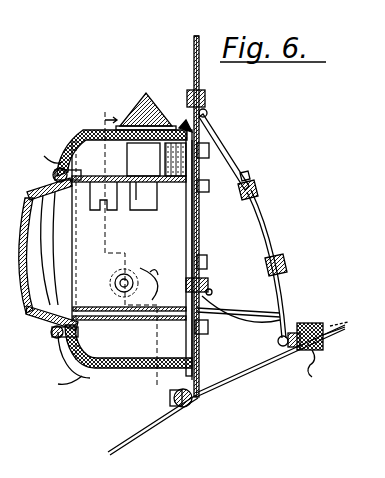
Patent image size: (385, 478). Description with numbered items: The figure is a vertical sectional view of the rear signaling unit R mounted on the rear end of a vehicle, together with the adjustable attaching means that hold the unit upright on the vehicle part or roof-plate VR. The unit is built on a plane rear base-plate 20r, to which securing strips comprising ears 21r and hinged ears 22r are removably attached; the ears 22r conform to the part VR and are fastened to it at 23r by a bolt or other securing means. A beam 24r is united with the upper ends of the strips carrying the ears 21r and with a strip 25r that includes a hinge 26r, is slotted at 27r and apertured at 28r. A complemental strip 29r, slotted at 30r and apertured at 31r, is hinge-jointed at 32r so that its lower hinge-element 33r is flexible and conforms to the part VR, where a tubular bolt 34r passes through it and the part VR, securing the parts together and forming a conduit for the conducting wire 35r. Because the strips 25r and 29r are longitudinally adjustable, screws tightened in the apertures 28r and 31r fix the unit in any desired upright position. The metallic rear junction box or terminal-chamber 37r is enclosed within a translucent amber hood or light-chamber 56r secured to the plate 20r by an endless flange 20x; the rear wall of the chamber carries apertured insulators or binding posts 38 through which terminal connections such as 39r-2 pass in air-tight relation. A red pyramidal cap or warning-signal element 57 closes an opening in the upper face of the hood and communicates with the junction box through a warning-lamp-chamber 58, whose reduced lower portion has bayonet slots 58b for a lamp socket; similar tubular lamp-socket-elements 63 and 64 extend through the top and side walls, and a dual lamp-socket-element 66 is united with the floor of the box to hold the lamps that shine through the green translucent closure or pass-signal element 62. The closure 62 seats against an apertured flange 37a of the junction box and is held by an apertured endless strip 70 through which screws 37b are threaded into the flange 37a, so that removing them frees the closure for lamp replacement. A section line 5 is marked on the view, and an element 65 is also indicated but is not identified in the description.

The rear base-plate 20r is at (200, 200).
The ears of securing strips 21r is at (200, 216).
The strip 25r is at (199, 80).
The beam 24r is at (205, 100).
The hinge 26r is at (207, 114).
The slot 27r is at (228, 158).
The complemental strip 29r is at (250, 177).
The aperture 31r is at (258, 192).
The slot 30r is at (262, 214).
The aperture 28r is at (272, 276).
The hinge joint 32r is at (278, 342).
The tubular bolt 34r is at (293, 333).
The hinge-element 33r is at (334, 306).
The roof-plate of the vehicle VR is at (210, 389).
The ears of securing strips 22r is at (160, 418).
The bolt or securing means 23r is at (192, 399).
The apertured insulators 38 is at (208, 283).
The terminal connection 39r-2 is at (212, 293).
The conducting wire 35r is at (252, 312).
The rear junction box 37r is at (192, 183).
The rear signaling unit R is at (72, 136).
The apertured flange 37a is at (88, 134).
The section line 5 is at (130, 248).
The translucent cap 57 is at (142, 110).
The endless flange 20x is at (183, 123).
The translucent hood 56r is at (54, 267).
The apertured endless strip 70 is at (53, 175).
The screws 37b is at (44, 187).
The pass-signal-element 62 is at (30, 313).
The tubular lamp-socket-element 63 is at (102, 222).
The warning-lamp-chamber 58 is at (129, 162).
The bayonet slots 58b is at (135, 212).
The lamp-socket-elements 64 is at (112, 276).
The hook 65 is at (127, 274).
The dual lamp-socket-element 66 is at (110, 285).